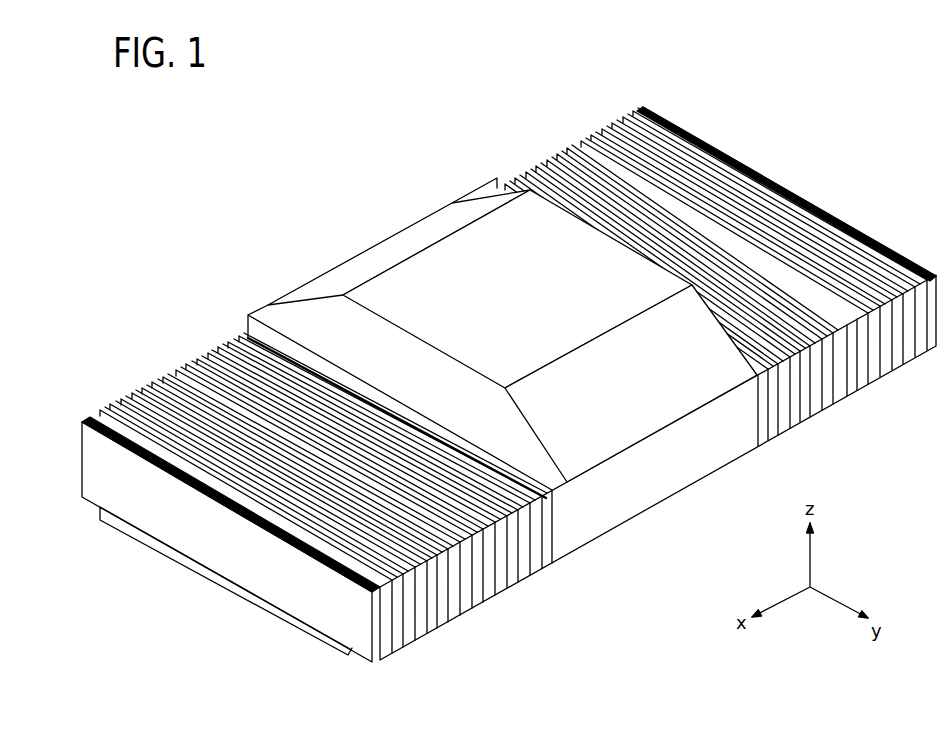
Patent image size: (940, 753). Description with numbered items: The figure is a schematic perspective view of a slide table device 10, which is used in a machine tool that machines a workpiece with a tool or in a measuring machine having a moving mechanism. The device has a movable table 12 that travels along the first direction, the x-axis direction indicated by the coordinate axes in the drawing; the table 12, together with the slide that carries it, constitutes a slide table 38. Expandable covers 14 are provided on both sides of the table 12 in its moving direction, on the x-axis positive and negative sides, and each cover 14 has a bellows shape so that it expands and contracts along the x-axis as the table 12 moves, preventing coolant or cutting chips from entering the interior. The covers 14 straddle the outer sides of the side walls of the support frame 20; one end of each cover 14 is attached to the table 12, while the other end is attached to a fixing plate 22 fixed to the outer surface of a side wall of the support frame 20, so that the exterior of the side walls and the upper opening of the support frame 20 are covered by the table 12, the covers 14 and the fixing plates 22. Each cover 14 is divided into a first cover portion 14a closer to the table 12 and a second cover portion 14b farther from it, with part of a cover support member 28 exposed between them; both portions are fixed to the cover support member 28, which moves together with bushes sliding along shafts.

The slide table device 10 is at (330, 166).
The table 12 is at (445, 267).
The cover 14 is at (167, 310).
The first cover portion 14a is at (227, 350).
The second cover portion 14b is at (113, 395).
The support frame 20 is at (127, 533).
The fixing plate 22 is at (803, 197).
The cover support member 28 is at (468, 610).
The slide table 38 is at (323, 250).